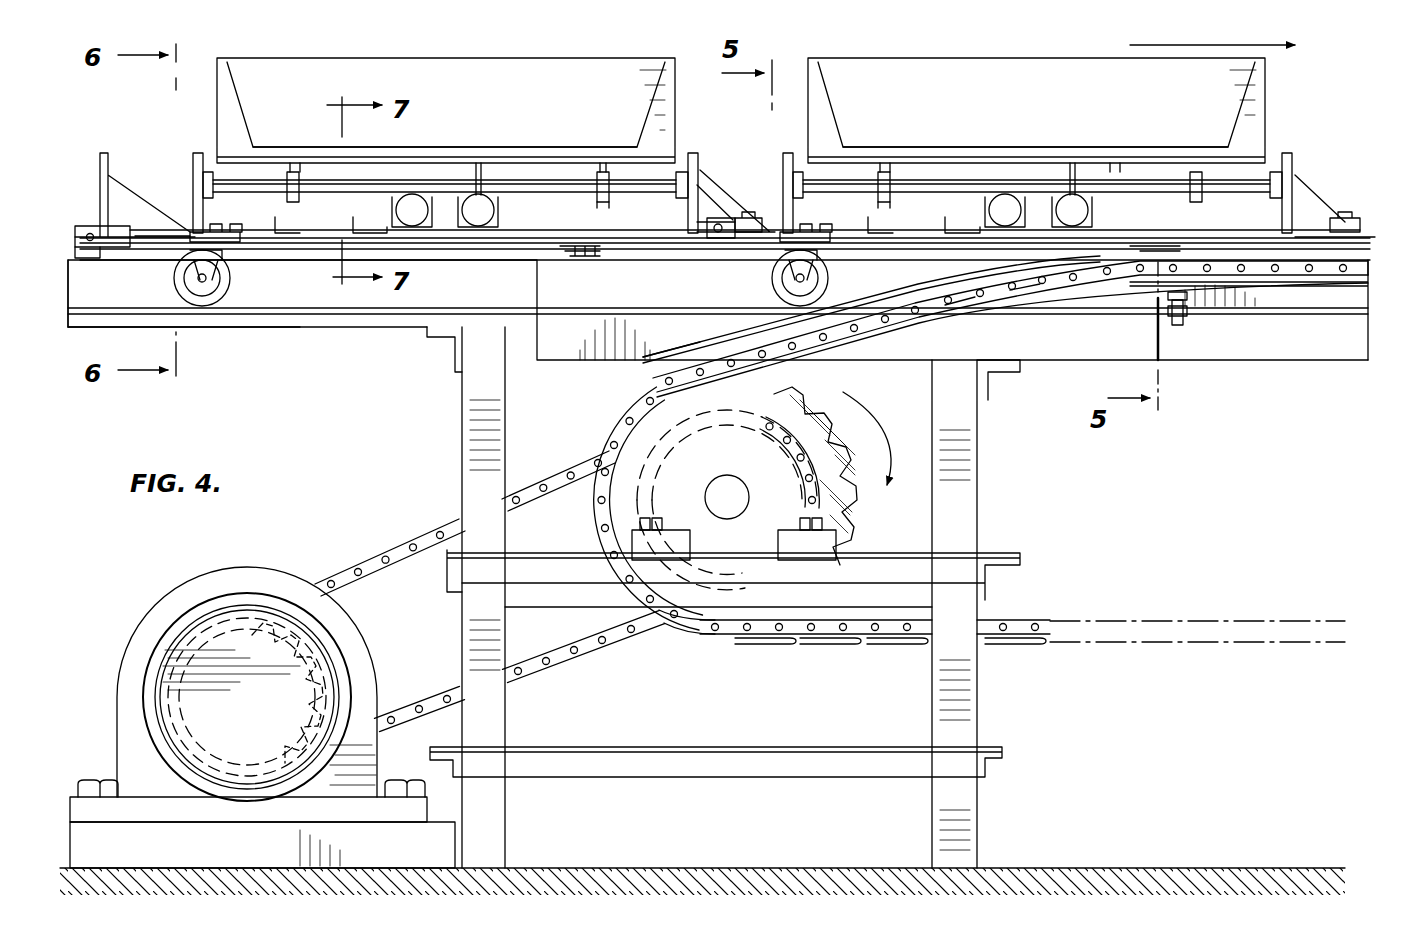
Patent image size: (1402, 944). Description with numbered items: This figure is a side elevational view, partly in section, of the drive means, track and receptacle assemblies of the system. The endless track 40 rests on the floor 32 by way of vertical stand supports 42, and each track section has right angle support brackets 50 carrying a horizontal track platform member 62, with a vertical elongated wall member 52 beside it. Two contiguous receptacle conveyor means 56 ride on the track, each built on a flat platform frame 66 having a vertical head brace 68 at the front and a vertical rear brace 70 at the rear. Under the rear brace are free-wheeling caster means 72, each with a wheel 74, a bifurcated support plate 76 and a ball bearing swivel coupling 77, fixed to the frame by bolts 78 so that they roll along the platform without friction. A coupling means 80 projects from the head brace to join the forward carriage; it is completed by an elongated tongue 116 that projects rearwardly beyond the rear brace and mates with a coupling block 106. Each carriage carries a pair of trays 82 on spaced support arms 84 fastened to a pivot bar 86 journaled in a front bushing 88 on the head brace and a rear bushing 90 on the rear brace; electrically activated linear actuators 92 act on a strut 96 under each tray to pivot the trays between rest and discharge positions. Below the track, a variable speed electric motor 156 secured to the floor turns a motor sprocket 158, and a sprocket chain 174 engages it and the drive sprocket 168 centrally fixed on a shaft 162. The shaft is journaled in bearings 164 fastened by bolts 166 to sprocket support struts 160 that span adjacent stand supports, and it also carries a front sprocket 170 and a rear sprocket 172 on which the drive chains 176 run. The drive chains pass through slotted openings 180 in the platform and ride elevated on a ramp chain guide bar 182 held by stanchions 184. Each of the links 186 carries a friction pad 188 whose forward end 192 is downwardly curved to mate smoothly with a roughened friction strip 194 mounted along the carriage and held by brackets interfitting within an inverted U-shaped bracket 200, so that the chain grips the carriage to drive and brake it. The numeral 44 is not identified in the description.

The floor 32 is at (1092, 868).
The endless track 40 is at (314, 332).
The vertical stand supports 42 is at (462, 493).
The drive chain 44 is at (990, 672).
The right angle support brackets 50 is at (385, 327).
The vertical elongated wall member 52 is at (410, 327).
The receptacle conveyor means 56 is at (630, 56).
The horizontal track platform member 62 is at (428, 308).
The platform frame 66 is at (358, 214).
The vertical head brace 68 is at (708, 205).
The vertical rear brace 70 is at (193, 195).
The caster means 72 is at (220, 327).
The wheel 74 is at (176, 285).
The bifurcated support plate 76 is at (210, 278).
The ball bearing swivel coupling 77 is at (230, 250).
The bolts 78 is at (216, 225).
The coupling means 80 is at (110, 185).
The trays 82 is at (740, 121).
The support arms 84 is at (296, 203).
The pivot bar 86 is at (612, 195).
The front bushing 88 is at (693, 158).
The rear bushing 90 is at (205, 138).
The linear actuators 92 is at (412, 194).
The strut 96 is at (478, 165).
The coupling block 106 is at (733, 238).
The elongated tongue 116 is at (168, 238).
The variable speed electric motor 156 is at (224, 572).
The motor sprocket 158 is at (330, 650).
The sprocket support strut 160 is at (913, 566).
The shaft 162 is at (727, 490).
The bearings 164 is at (690, 492).
The bolts 166 is at (640, 528).
The drive sprocket 168 is at (846, 436).
The front sprocket 170 is at (702, 403).
The rear sprocket 172 is at (782, 392).
The sprocket chain 174 is at (563, 658).
The drive chains 176 is at (870, 330).
The slotted openings 180 is at (832, 305).
The ramp chain guide bar 182 is at (1297, 296).
The stanchions 184 is at (1192, 300).
The links 186 is at (985, 282).
The friction pads 188 is at (780, 318).
The forward end 192 is at (705, 356).
The friction strip 194 is at (557, 258).
The inverted U-shaped bracket 200 is at (587, 258).